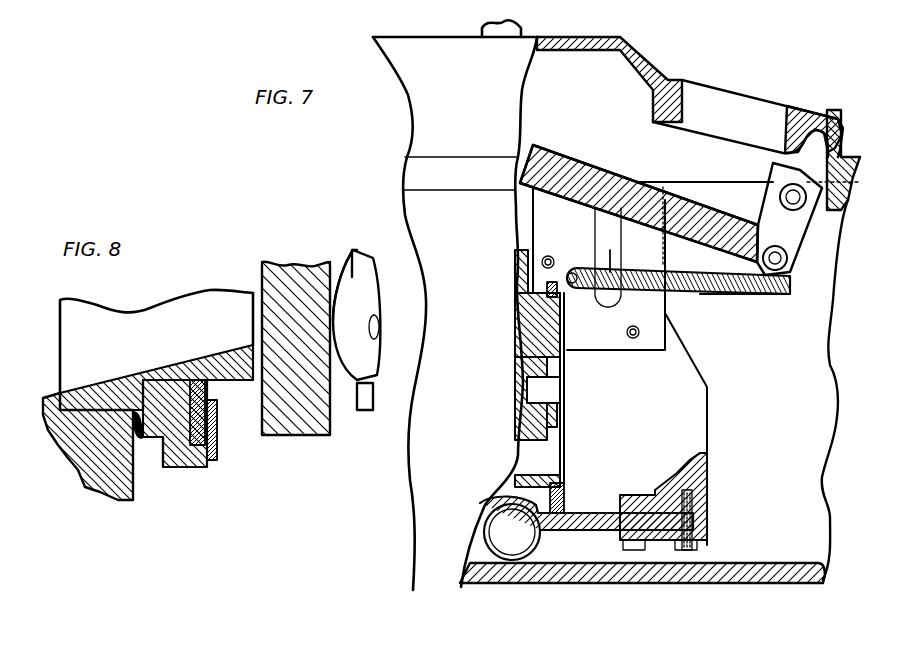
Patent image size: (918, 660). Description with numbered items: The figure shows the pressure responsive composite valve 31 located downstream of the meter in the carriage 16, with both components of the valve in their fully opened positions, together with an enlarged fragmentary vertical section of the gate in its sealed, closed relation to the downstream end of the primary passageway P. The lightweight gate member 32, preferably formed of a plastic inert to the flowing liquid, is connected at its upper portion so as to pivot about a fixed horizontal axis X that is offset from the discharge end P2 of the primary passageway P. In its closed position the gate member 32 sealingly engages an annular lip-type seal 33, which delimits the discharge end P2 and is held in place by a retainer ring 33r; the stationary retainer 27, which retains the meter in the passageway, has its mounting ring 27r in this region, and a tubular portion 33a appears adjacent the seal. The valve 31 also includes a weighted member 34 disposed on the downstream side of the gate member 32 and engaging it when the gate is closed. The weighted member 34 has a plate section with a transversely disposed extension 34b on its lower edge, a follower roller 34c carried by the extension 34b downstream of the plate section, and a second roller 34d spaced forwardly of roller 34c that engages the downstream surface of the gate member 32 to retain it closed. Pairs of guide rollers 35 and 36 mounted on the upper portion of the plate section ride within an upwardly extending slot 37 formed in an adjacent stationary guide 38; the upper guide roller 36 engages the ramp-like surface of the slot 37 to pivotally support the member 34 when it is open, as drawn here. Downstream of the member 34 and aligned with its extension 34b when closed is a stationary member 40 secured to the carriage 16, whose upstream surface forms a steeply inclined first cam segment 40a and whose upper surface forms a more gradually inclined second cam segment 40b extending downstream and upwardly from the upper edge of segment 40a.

In FIG. 8, the carriage 16 is at (102, 487).
In FIG. 7, the stationary retainer 27 is at (560, 432).
In FIG. 8, the stationary retainer 27 is at (157, 471).
In FIG. 8, the mounting ring 27r is at (177, 460).
In FIG. 7, the composite valve 31 is at (805, 296).
In FIG. 7, the gate member 32 is at (750, 298).
In FIG. 8, the gate member 32 is at (292, 428).
In FIG. 7, the annular lip-type seal 33 is at (562, 483).
In FIG. 8, the annular lip-type seal 33 is at (215, 450).
In FIG. 7, the tubular pivot member 33a is at (535, 543).
In FIG. 8, the retainer ring 33r is at (195, 473).
In FIG. 7, the weighted member 34 is at (710, 200).
In FIG. 8, the transversely disposed extension 34b is at (360, 263).
In FIG. 7, the follower roller 34c is at (810, 222).
In FIG. 7, the second roller 34d is at (790, 267).
In FIG. 8, the second roller 34d is at (357, 370).
In FIG. 7, the guide rollers 35 is at (603, 175).
In FIG. 7, the upper guide roller 36 is at (560, 165).
In FIG. 7, the upwardly extending slot 37 is at (687, 293).
In FIG. 7, the stationary guide 38 is at (645, 254).
In FIG. 7, the stationary member 40 is at (703, 480).
In FIG. 7, the first cam segment 40a is at (677, 533).
In FIG. 7, the second cam segment 40b is at (690, 453).
In FIG. 8, the primary passageway P is at (97, 338).
In FIG. 7, the discharge end P2 is at (560, 458).
In FIG. 8, the discharge end P2 is at (243, 343).
In FIG. 7, the fixed horizontal axis X is at (577, 263).